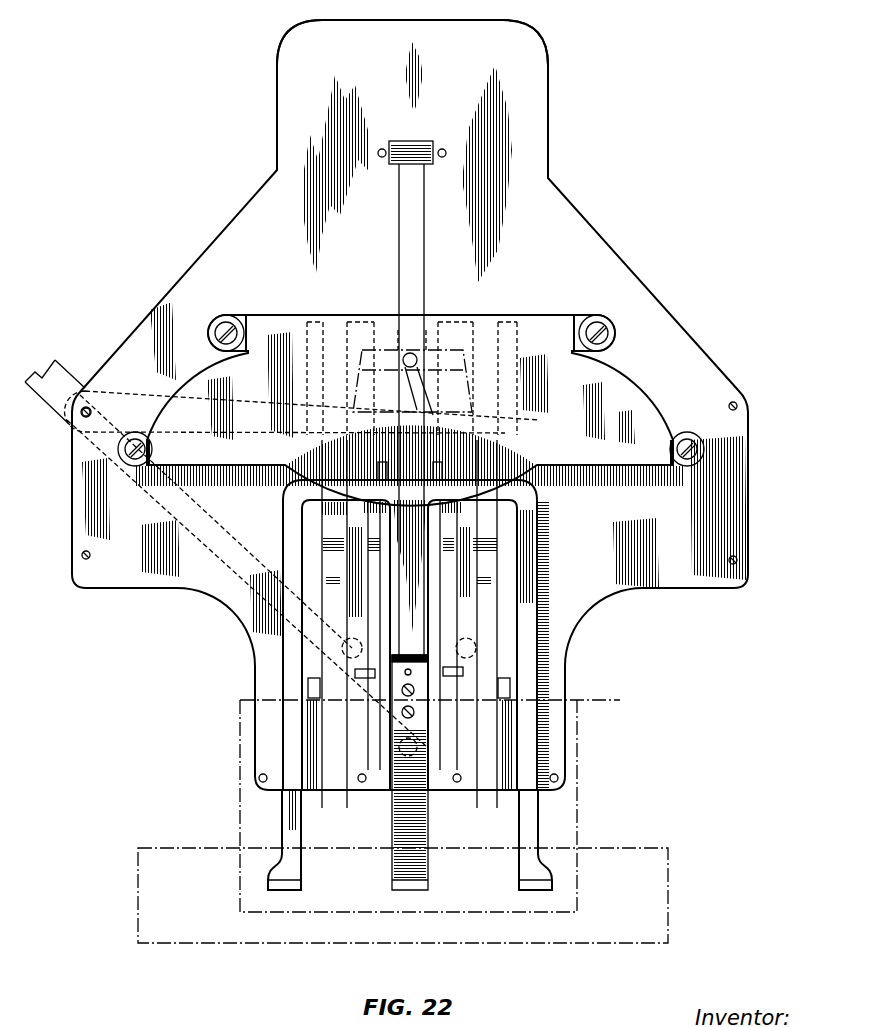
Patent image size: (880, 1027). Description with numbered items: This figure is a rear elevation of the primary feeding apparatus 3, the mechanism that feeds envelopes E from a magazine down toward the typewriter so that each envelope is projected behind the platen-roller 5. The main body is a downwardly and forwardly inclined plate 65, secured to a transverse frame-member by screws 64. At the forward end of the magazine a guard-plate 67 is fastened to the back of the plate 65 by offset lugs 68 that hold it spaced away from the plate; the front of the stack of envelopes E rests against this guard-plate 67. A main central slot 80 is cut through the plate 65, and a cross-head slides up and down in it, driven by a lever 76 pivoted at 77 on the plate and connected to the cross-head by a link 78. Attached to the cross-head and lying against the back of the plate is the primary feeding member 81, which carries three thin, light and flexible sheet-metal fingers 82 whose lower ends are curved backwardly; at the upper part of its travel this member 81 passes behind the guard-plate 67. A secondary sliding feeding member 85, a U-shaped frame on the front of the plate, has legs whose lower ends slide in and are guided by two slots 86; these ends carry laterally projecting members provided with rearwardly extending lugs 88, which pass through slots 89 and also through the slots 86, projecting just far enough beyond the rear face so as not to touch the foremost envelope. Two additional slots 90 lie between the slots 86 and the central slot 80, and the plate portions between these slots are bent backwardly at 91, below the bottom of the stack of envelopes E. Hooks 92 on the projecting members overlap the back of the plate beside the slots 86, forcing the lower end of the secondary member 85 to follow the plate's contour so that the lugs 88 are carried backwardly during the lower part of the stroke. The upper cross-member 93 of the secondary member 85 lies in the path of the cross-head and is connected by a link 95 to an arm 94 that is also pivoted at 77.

The primary feeding apparatus 3 is at (410, 405).
The plate 65 is at (543, 181).
The screws 64 is at (737, 405).
The guard-plate 67 is at (536, 332).
The offset lugs 68 is at (226, 320).
The slot 80 is at (404, 255).
The secondary sliding feeding member 85 is at (355, 358).
The upper cross-member 93 is at (440, 324).
The arm 94 is at (505, 410).
The link 95 is at (203, 433).
The lever 76 is at (60, 372).
The pivot 77 is at (80, 418).
The primary feeding member 81 is at (540, 560).
The slots 86 is at (354, 780).
The backwardly bent portion 91 is at (373, 570).
The slots 89 is at (308, 647).
The hooks 92 is at (355, 672).
The rearwardly extending lugs 88 is at (317, 698).
The link 78 is at (380, 713).
The envelopes E is at (578, 792).
The platen-roller 5 is at (165, 848).
The fingers 82 is at (288, 892).
The slots 90 is at (382, 800).